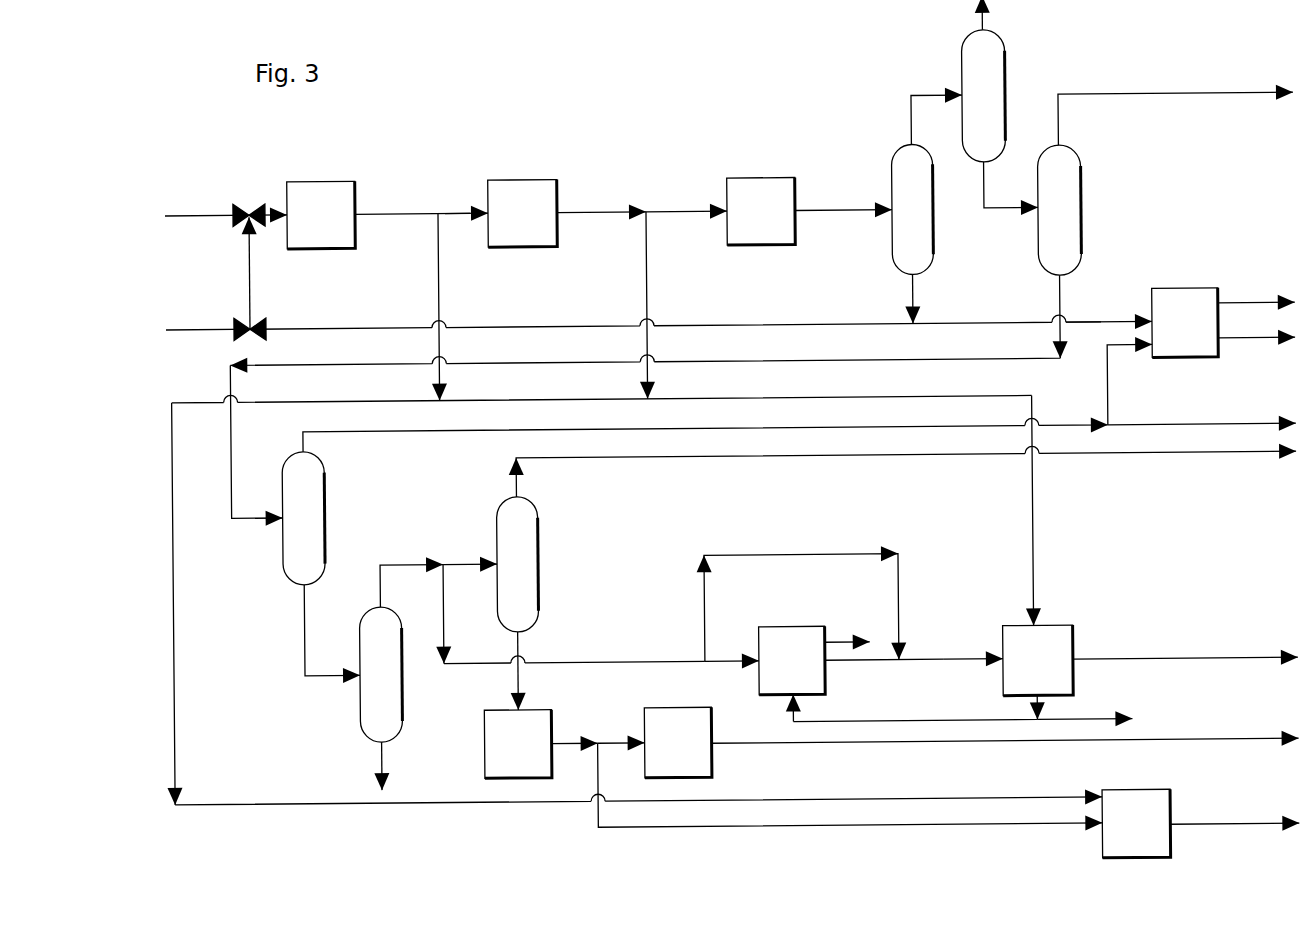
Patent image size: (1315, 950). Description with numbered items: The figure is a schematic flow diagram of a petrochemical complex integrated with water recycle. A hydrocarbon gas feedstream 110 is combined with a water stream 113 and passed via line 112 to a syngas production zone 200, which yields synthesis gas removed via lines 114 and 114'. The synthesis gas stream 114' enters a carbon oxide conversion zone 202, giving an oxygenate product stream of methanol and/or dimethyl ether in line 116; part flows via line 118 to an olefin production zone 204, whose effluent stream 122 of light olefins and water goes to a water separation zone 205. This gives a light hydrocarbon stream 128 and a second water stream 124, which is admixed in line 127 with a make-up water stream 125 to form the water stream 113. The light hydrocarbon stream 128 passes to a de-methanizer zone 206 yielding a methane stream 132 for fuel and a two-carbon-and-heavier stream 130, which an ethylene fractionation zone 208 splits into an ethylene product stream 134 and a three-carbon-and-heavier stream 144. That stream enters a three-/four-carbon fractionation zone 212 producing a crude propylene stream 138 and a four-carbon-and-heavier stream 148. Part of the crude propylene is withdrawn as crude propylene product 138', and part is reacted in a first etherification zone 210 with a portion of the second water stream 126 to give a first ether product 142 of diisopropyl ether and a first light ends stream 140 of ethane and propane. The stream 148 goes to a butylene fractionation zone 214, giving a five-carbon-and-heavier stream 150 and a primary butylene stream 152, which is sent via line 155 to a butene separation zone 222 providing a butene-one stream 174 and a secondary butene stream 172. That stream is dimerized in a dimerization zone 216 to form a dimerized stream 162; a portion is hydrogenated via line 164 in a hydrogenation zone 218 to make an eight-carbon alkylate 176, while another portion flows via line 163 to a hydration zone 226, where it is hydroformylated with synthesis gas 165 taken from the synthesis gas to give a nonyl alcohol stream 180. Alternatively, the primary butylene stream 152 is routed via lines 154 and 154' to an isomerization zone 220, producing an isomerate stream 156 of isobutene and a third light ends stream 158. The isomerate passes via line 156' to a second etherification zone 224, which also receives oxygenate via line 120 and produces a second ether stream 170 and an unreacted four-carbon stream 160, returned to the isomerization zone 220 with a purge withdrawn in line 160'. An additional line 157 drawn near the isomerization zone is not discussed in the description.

The hydrocarbon gas feedstream 110 is at (183, 217).
The line 112 is at (252, 182).
The water stream 113 is at (250, 300).
The synthesis gas stream 114 is at (421, 200).
The synthesis gas stream 114' is at (457, 180).
The oxygenate product stream 116 is at (590, 216).
The line 118 is at (680, 218).
The line 120 is at (650, 300).
The effluent stream 122 is at (842, 216).
The second water stream 124 is at (914, 300).
The make-up water stream 125 is at (205, 329).
The second water stream 126 is at (995, 331).
The line 127 is at (805, 330).
The light hydrocarbon stream 128 is at (943, 100).
The C2+ stream 130 is at (984, 215).
The methane stream 132 is at (985, 22).
The ethylene product stream 134 is at (1185, 102).
The crude propylene stream 138 is at (700, 431).
The crude propylene product 138' is at (1202, 410).
The first light ends stream 140 is at (1245, 312).
The first ether product 142 is at (1245, 347).
The C3+ stream 144 is at (1061, 300).
The C4+ stream 148 is at (322, 678).
The C5 and heavier stream 150 is at (377, 770).
The primary butylene stream 152 is at (400, 567).
The line 154 is at (566, 631).
The line 154' is at (717, 676).
The line 155 is at (448, 567).
The isomerate stream 156 is at (884, 681).
The line 156' is at (962, 645).
The bypass stream 157 is at (820, 560).
The third light ends stream 158 is at (834, 647).
The unreacted C4 stream 160 is at (915, 702).
The line 160' is at (1110, 702).
The dimerized stream 162 is at (568, 745).
The line 163 is at (963, 832).
The line 164 is at (612, 747).
The synthesis gas 165 is at (440, 300).
The second ether stream 170 is at (1228, 667).
The secondary butene stream 172 is at (520, 636).
The butene-1 stream 174 is at (648, 462).
The C8 alkylate 176 is at (1232, 748).
The nonyl alcohol stream 180 is at (1228, 834).
The syngas production zone 200 is at (298, 183).
The carbon oxide conversion zone 202 is at (518, 183).
The olefin production zone 204 is at (770, 183).
The water separation zone 205 is at (890, 258).
The de-methanizer zone 206 is at (1006, 75).
The ethylene fractionation zone 208 is at (1081, 205).
The first etherification zone 210 is at (1200, 297).
The C3/C4 fractionation zone 212 is at (322, 505).
The butylene fractionation zone 214 is at (356, 710).
The dimerization zone 216 is at (480, 765).
The hydrogenation zone 218 is at (707, 780).
The isomerization zone 220 is at (805, 632).
The butene separation zone 222 is at (535, 545).
The second etherification zone 224 is at (1060, 633).
The hydration zone 226 is at (1165, 812).